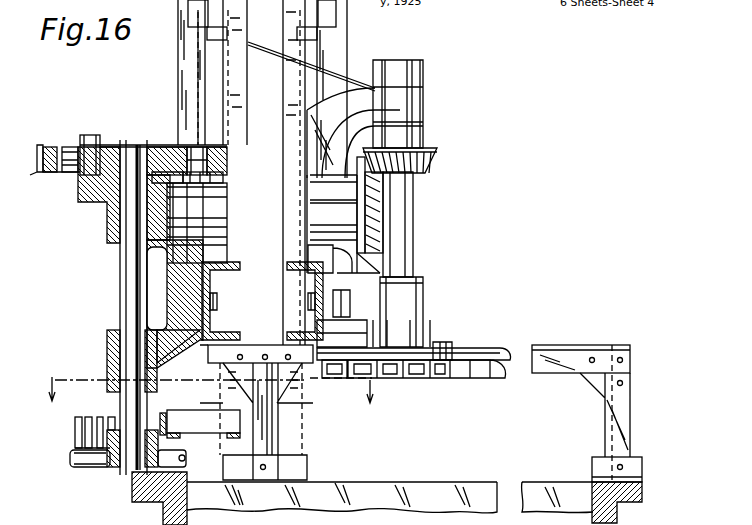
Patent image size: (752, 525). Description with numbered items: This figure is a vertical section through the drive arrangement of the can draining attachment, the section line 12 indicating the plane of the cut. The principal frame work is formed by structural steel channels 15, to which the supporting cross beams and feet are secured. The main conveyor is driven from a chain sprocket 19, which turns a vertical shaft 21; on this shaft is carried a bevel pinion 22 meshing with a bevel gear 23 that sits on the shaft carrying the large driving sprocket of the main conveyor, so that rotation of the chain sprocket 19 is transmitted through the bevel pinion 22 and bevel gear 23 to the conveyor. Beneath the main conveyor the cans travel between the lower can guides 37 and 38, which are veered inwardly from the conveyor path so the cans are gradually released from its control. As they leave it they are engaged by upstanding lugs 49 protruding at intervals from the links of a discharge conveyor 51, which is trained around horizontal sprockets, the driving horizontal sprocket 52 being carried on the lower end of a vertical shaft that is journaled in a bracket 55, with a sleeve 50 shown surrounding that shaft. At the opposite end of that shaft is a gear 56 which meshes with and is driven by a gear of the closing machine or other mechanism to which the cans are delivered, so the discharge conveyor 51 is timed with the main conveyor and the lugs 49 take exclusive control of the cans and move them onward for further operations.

The center line / section axis 12 is at (206, 390).
The structural steel channels 15 is at (303, 290).
The chain sprocket 19 is at (440, 370).
The vertical shaft 21 is at (415, 238).
The bevel pinion 22 is at (427, 163).
The bevel gear 23 is at (372, 207).
The guide 37 is at (247, 428).
The guide 38 is at (160, 420).
The upstanding lugs 49 is at (75, 433).
The spindle 50 is at (137, 287).
The discharge conveyor 51 is at (72, 457).
The horizontal sprocket 52 is at (115, 455).
The bracket 55 is at (107, 227).
The gear 56 is at (37, 170).